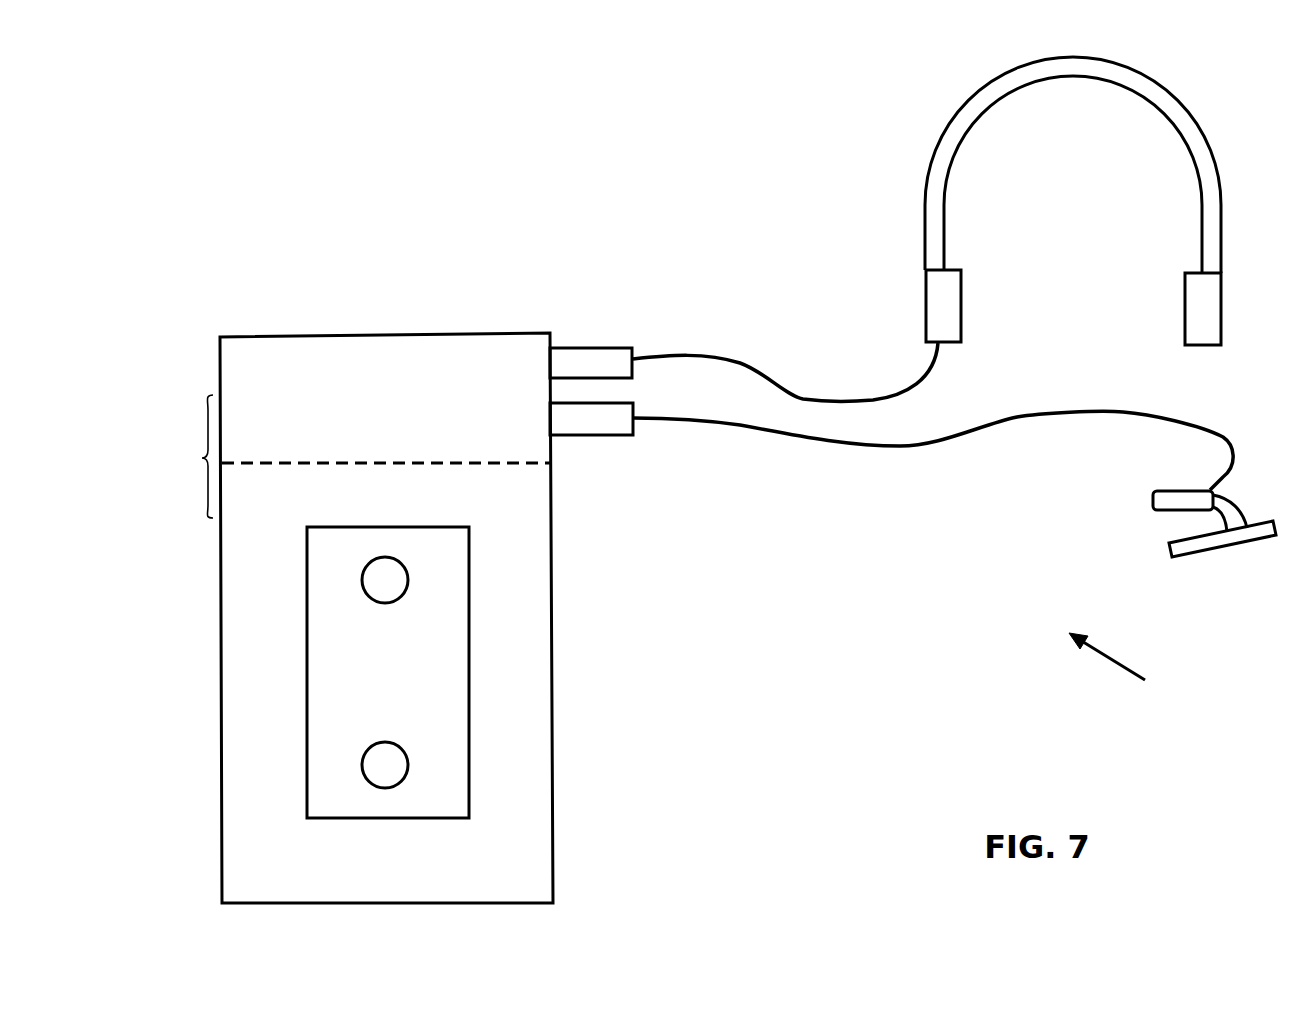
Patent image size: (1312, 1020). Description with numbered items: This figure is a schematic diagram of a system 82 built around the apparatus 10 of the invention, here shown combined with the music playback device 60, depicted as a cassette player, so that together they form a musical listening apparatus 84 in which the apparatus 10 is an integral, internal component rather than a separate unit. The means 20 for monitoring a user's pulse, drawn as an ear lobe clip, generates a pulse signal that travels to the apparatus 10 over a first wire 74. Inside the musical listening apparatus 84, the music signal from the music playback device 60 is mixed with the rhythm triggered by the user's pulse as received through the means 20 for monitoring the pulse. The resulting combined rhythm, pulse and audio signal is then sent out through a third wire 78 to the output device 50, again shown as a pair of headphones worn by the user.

The apparatus 10 is at (315, 358).
The means for monitoring a user's pulse 20 is at (1227, 513).
The output device 50 is at (1097, 77).
The music playback device 60 is at (527, 702).
The first wire 74 is at (933, 446).
The third wire 78 is at (738, 363).
The system 82 is at (1123, 670).
The musical listening apparatus 84 is at (358, 456).